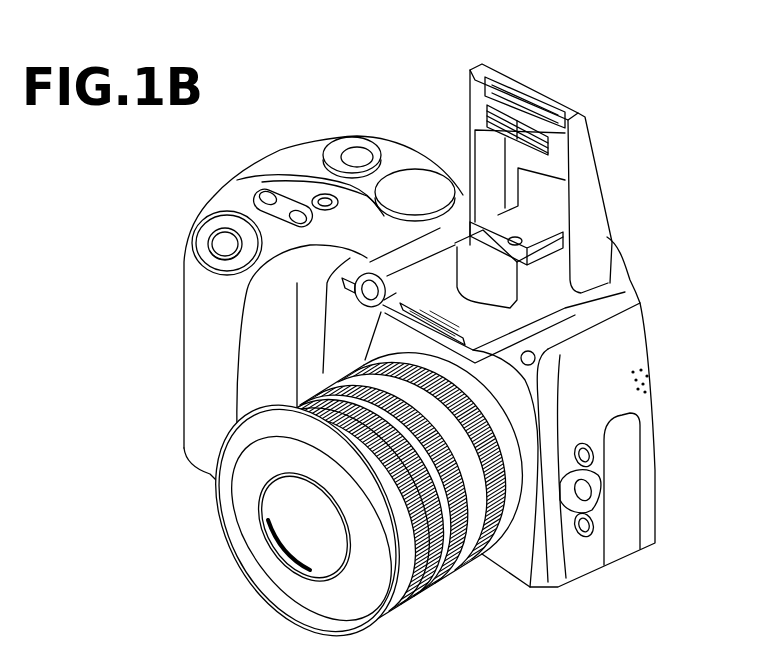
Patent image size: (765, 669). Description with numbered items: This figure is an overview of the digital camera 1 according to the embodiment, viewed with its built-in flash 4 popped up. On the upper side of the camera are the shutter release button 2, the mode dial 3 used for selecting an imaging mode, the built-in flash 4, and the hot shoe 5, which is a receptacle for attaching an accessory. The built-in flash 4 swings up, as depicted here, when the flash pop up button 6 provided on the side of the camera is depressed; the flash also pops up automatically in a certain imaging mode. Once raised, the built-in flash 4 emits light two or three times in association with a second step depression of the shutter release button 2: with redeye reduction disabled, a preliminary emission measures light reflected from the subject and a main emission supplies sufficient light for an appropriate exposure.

The digital camera 1 is at (282, 84).
The shutter release button 2 is at (223, 237).
The mode dial 3 is at (410, 182).
The built-in flash 4 is at (495, 118).
The hot shoe 5 is at (522, 237).
The flash pop up button 6 is at (535, 356).